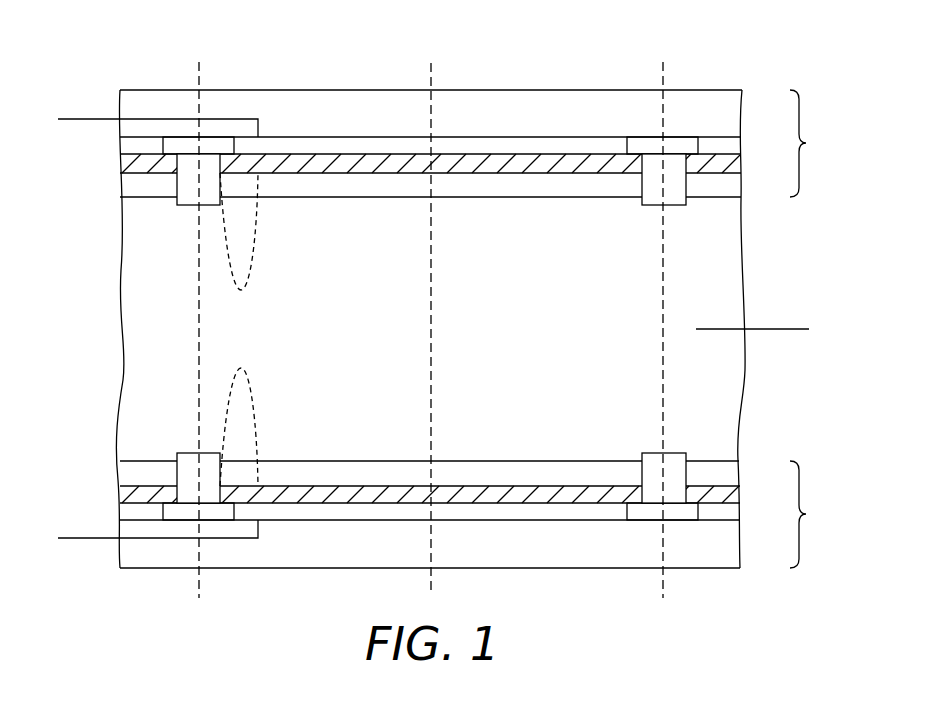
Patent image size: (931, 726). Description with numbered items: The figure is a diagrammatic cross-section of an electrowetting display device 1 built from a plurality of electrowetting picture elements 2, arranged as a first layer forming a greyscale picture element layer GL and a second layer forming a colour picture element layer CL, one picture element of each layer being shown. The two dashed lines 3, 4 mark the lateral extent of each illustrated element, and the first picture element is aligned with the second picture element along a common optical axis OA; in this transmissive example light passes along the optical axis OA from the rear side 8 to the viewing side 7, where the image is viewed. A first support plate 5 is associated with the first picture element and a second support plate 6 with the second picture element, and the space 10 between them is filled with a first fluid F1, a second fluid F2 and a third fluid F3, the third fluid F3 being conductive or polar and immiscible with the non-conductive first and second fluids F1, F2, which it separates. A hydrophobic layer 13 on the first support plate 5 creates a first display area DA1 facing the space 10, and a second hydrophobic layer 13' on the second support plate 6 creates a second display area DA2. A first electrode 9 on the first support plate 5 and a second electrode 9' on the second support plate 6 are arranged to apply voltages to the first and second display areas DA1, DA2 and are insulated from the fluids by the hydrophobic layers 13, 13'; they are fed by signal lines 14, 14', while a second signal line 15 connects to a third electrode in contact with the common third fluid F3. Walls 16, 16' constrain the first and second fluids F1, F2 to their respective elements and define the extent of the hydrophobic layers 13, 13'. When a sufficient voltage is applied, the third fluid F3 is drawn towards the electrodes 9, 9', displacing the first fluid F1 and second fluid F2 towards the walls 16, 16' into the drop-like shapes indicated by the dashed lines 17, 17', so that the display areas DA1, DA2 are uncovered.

The electrowetting display device 1 is at (766, 75).
The electrowetting picture elements 2 is at (313, 74).
The dashed line 3 is at (199, 67).
The dashed line 4 is at (664, 64).
The first support plate 5 is at (728, 537).
The second support plate 6 is at (728, 122).
The viewing side 7 is at (588, 89).
The rear side 8 is at (588, 570).
The first electrode 9 is at (430, 466).
The second electrode 9' is at (430, 198).
The space 10 is at (726, 285).
The hydrophobic layer 13 is at (430, 457).
The second hydrophobic layer 13' is at (431, 206).
The signal line 14 is at (158, 561).
The signal line 14' is at (158, 97).
The second signal line 15 is at (785, 330).
The walls 16 is at (432, 452).
The walls 16' is at (435, 206).
The dashed line 17 is at (266, 416).
The dashed line 17' is at (270, 242).
The optical axis OA is at (432, 66).
The first display area DA1 is at (388, 487).
The second display area DA2 is at (395, 174).
The first fluid F1 is at (582, 470).
The second fluid F2 is at (582, 188).
The third fluid F3 is at (127, 330).
The colour picture element layer CL is at (816, 143).
The greyscale picture element layer GL is at (817, 514).